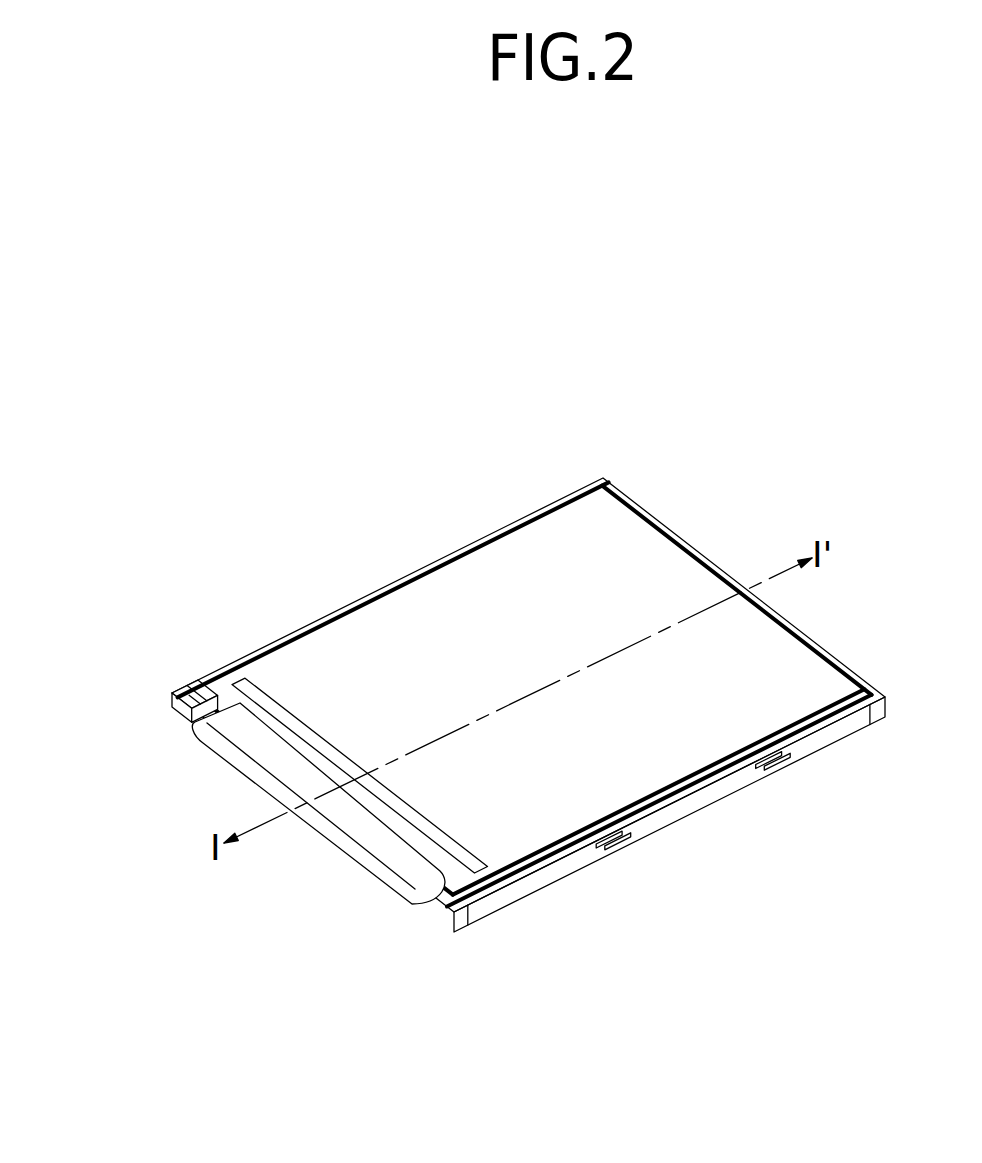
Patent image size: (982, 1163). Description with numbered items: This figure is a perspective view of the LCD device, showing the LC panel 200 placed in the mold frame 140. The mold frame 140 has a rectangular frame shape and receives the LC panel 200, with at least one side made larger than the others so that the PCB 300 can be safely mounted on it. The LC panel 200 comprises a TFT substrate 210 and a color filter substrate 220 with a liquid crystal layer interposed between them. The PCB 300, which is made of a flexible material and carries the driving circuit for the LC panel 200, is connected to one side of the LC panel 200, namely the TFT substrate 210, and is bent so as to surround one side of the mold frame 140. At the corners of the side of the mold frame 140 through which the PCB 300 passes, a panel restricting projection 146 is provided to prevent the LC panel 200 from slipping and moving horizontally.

The mold frame 140 is at (683, 808).
The panel restricting projection 146 is at (188, 692).
The LC panel 200 is at (523, 668).
The TFT substrate 210 is at (340, 706).
The color filter substrate 220 is at (333, 632).
The PCB 300 is at (372, 866).